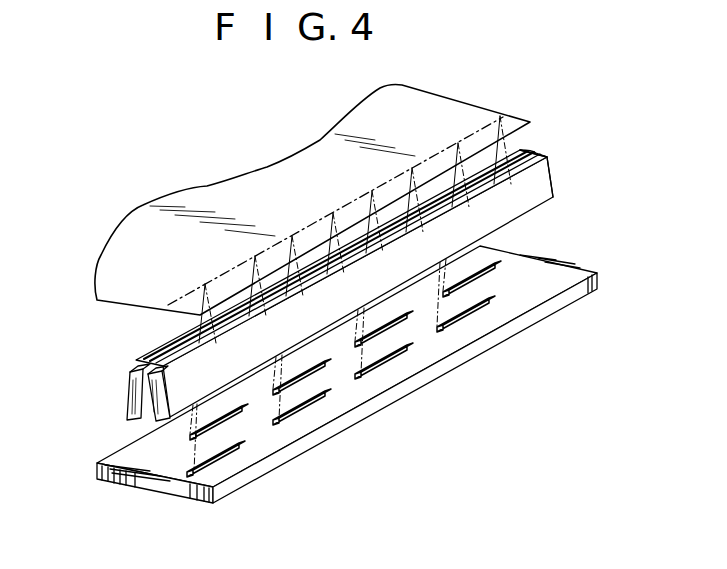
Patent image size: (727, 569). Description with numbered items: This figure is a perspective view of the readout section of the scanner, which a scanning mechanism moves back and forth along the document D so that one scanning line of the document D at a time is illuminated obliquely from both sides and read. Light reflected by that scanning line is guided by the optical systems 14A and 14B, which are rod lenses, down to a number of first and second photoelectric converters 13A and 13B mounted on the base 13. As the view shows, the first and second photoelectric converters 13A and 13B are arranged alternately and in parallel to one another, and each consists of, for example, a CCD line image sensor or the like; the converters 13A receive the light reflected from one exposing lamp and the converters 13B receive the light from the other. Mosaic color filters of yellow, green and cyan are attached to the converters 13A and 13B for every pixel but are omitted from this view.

The document D is at (457, 106).
The plate 13 is at (577, 263).
The first photoelectric converters 13A is at (488, 304).
The second photoelectric converters 13B is at (496, 268).
The optical system (rod lens) 14A is at (544, 186).
The optical system (rod lens) 14B is at (132, 394).